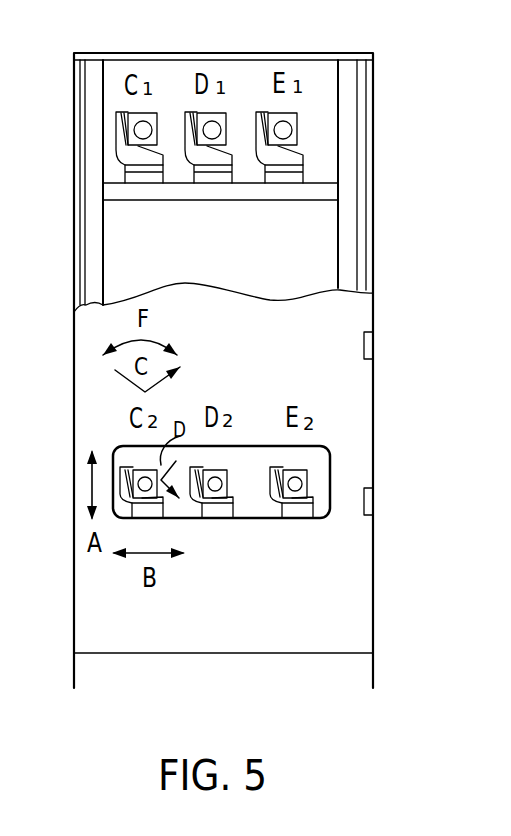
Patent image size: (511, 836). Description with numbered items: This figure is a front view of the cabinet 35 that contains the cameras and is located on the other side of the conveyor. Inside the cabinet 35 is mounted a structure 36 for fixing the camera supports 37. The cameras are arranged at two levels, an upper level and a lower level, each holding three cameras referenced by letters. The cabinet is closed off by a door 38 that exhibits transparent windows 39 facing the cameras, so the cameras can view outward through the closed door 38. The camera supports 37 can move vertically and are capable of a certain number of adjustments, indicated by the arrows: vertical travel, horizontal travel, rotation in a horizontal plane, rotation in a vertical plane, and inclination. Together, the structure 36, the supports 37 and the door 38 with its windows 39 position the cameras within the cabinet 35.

The cabinet 35 is at (375, 250).
The structure 36 is at (334, 196).
The camera supports 37 is at (257, 113).
The door 38 is at (357, 322).
The transparent windows 39 is at (324, 466).